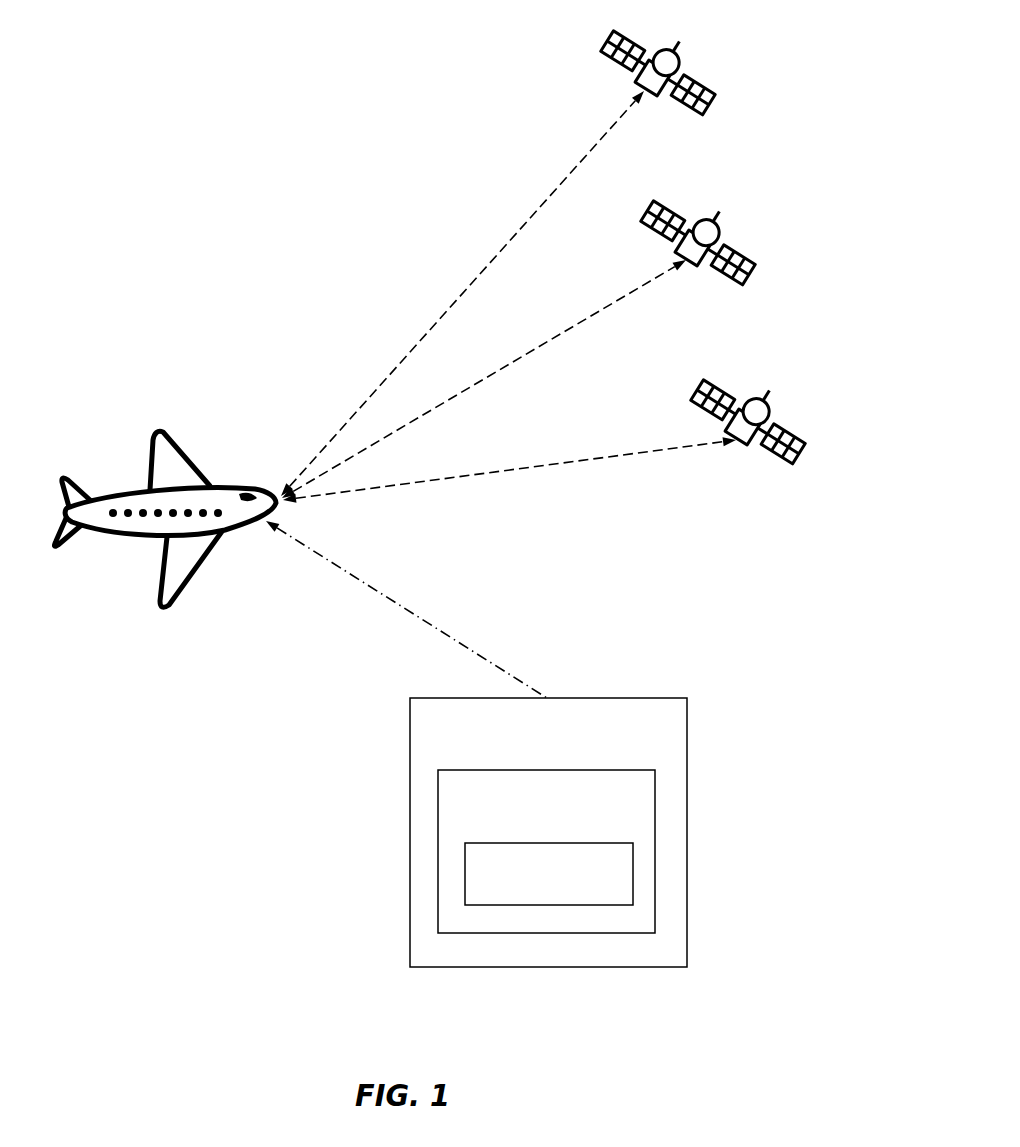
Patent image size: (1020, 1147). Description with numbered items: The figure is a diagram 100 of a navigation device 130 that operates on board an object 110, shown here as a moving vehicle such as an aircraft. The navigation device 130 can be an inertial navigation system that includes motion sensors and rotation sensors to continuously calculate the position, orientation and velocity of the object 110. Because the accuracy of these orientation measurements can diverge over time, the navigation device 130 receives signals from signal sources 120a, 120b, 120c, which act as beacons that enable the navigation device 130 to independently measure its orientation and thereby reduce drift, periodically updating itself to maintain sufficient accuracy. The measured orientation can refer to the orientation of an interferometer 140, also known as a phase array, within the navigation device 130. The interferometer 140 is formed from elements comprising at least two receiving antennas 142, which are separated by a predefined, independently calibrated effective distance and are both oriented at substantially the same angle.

The diagram 100 is at (163, 58).
The object 110 is at (147, 452).
The signal source 120a is at (705, 84).
The signal source 120b is at (745, 254).
The signal source 120c is at (797, 434).
The navigation device 130 is at (667, 749).
The interferometer 140 is at (645, 821).
The receiving antennas 142 is at (622, 886).